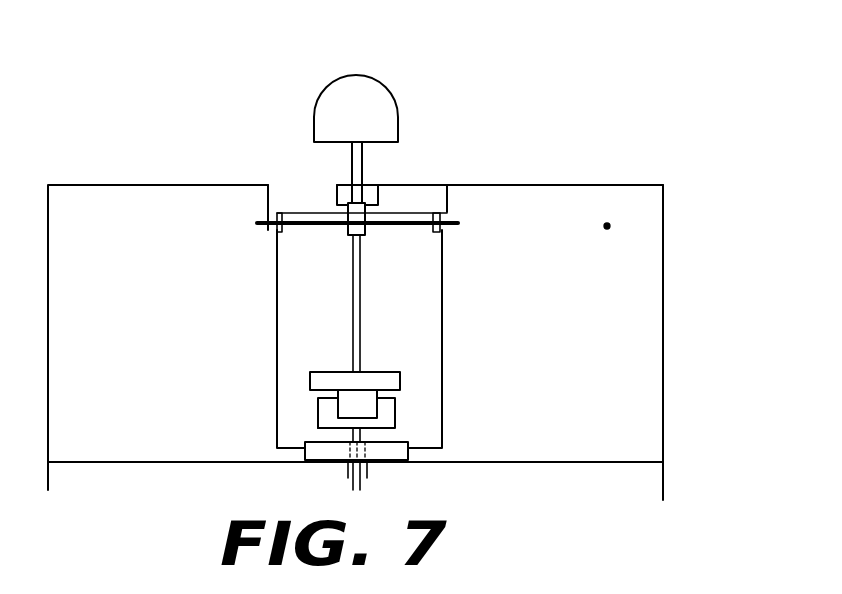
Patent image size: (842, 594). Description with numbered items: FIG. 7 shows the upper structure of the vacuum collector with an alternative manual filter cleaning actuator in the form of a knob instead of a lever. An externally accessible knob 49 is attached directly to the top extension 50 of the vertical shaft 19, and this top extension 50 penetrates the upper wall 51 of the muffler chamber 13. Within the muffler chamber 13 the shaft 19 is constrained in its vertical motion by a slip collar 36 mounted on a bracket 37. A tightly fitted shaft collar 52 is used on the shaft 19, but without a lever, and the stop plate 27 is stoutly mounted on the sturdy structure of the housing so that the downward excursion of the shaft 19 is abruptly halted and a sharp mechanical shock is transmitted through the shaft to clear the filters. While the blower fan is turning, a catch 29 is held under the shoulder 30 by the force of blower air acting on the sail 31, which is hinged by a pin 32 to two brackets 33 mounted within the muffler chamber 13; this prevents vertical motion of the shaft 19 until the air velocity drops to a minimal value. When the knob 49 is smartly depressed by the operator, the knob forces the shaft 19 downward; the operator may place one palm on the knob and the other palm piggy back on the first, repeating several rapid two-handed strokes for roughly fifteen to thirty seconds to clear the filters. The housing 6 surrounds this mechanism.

The housing 6 is at (663, 318).
The muffler chamber 13 is at (607, 226).
The vertical shaft 19 is at (362, 313).
The stop plate 27 is at (408, 456).
The catch 29 is at (318, 413).
The shoulder 30 is at (318, 398).
The sail 31 is at (277, 315).
The pin 32 is at (458, 222).
The brackets 33 is at (262, 199).
The slip collar 36 is at (348, 236).
The bracket 37 is at (381, 196).
The knob 49 is at (392, 90).
The top extension 50 is at (362, 168).
The upper wall 51 is at (556, 185).
The shaft collar 52 is at (403, 378).